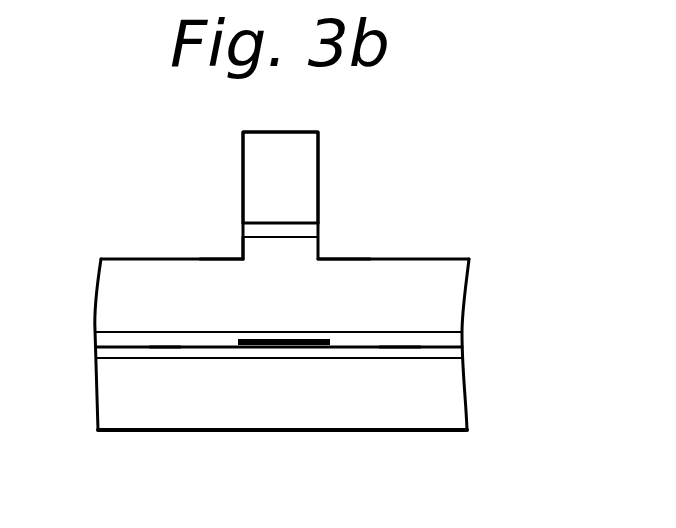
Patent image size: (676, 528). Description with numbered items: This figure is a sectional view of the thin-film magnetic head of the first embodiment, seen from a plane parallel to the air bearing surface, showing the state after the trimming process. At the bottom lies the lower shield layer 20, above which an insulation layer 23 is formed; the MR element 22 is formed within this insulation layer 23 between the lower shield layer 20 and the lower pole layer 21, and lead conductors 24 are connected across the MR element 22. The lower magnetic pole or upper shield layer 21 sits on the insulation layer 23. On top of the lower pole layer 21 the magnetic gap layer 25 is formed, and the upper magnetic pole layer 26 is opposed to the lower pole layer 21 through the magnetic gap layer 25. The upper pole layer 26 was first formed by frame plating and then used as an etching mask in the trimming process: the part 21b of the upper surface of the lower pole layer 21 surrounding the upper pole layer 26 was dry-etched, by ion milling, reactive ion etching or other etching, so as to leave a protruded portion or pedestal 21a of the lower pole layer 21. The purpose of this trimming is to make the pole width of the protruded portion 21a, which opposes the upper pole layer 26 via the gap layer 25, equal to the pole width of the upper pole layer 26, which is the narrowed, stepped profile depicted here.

The lower shield layer 20 is at (453, 407).
The lower magnetic pole or upper shield layer 21 is at (453, 277).
The protruded portion or pedestal of the lower pole layer 21a is at (256, 247).
The part of the upper surface of the lower pole layer 21b is at (208, 253).
The MR element 22 is at (295, 346).
The insulation layer 23 is at (443, 333).
The lead conductors 24 is at (155, 346).
The magnetic gap layer 25 is at (305, 228).
The upper magnetic pole layer 26 is at (300, 153).